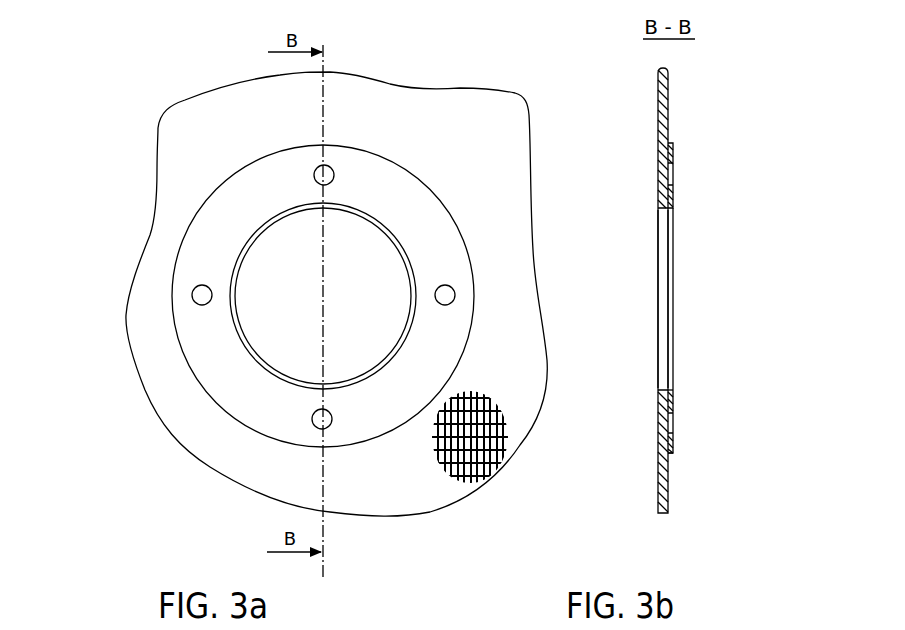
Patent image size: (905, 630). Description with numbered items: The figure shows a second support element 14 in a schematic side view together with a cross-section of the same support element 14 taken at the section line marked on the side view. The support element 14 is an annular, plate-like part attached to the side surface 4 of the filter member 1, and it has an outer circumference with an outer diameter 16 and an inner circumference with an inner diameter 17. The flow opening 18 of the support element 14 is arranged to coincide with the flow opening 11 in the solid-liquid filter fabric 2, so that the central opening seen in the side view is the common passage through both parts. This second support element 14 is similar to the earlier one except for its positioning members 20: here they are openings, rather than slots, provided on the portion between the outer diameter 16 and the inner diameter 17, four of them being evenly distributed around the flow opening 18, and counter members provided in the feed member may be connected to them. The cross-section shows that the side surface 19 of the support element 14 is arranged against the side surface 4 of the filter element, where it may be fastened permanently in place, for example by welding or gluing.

In FIG. 3a, the filter member 1 is at (142, 48).
In FIG. 3b, the filter member 1 is at (588, 38).
In FIG. 3a, the solid-liquid filter fabric 2 is at (145, 143).
In FIG. 3b, the solid-liquid filter fabric 2 is at (661, 96).
In FIG. 3a, the side surface 4 is at (336, 294).
In FIG. 3b, the side surface 4 is at (666, 490).
In FIG. 3a, the flow opening 11 is at (323, 296).
In FIG. 3b, the flow opening 11 is at (660, 268).
In FIG. 3a, the support element 14 is at (164, 331).
In FIG. 3b, the support element 14 is at (673, 153).
In FIG. 3a, the outer diameter 16 is at (188, 362).
In FIG. 3b, the outer diameter 16 is at (668, 455).
In FIG. 3a, the inner diameter 17 is at (398, 252).
In FIG. 3b, the inner diameter 17 is at (671, 390).
In FIG. 3b, the flow opening 18 is at (673, 290).
In FIG. 3a, the side surface 19 is at (238, 397).
In FIG. 3b, the side surface 19 is at (667, 405).
In FIG. 3a, the positioning members 20 is at (327, 168).
In FIG. 3b, the positioning members 20 is at (673, 172).